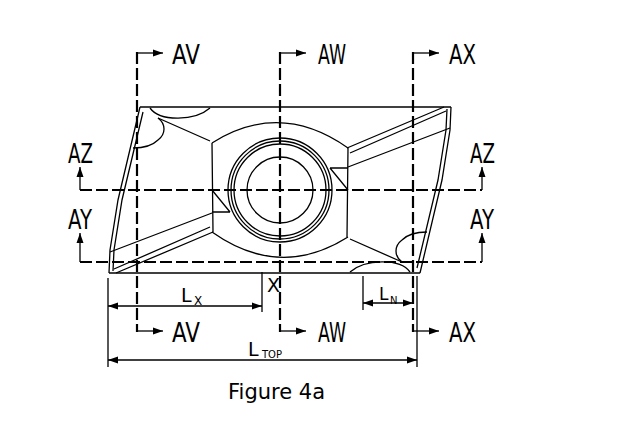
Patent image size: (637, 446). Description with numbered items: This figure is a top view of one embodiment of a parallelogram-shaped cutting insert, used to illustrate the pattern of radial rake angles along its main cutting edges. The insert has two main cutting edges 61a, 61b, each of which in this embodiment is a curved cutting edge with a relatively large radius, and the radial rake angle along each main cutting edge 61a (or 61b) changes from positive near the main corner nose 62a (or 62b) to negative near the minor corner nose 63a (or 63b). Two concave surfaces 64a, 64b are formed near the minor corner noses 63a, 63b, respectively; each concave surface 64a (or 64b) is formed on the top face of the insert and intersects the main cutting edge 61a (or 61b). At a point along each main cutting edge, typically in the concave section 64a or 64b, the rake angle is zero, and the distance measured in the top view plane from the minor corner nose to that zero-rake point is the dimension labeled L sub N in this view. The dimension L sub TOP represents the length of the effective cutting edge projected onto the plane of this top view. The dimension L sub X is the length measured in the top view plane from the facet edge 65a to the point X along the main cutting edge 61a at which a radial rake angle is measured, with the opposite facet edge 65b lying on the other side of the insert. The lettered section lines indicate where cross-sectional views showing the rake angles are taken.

The main cutting edge 61a is at (320, 278).
The main cutting edge 61b is at (220, 104).
The main corner nose 62a is at (108, 292).
The main corner nose 62b is at (455, 99).
The minor corner nose 63a is at (424, 272).
The minor corner nose 63b is at (142, 108).
The concave surface 64a is at (426, 251).
The concave surface 64b is at (150, 128).
The facet edge 65a is at (106, 256).
The facet edge 65b is at (460, 117).